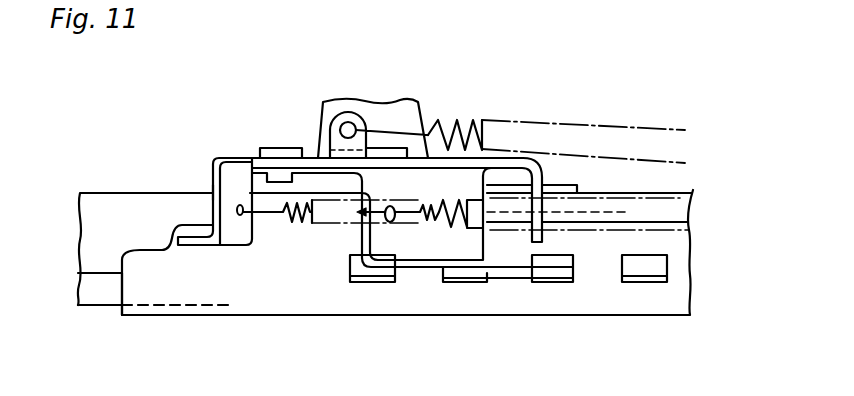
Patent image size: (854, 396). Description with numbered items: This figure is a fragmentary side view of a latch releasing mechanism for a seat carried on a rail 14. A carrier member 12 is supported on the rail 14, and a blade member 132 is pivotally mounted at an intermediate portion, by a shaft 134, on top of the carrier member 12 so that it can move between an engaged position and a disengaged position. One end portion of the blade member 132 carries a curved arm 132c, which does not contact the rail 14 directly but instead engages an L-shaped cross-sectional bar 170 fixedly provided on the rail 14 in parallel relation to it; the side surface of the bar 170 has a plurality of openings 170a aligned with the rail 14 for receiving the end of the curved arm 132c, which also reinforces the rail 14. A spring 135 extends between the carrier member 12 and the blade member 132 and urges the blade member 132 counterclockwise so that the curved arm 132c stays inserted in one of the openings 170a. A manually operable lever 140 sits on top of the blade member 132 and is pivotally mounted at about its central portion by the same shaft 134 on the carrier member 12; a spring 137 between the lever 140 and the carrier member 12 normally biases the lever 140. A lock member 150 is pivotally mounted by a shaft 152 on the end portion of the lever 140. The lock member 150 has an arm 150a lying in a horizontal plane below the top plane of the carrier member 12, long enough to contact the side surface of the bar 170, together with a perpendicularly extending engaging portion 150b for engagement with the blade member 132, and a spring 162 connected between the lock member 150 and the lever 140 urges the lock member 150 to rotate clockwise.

The carrier member 12 is at (118, 208).
The rail 14 is at (108, 297).
The lock member 150 is at (235, 153).
The arm 150a is at (195, 243).
The engaging portion 150b is at (212, 193).
The shaft 152 is at (278, 147).
The shaft 134 is at (320, 150).
The spring 137 is at (458, 122).
The lever 140 is at (560, 170).
The spring 162 is at (285, 222).
The blade member 132 is at (362, 233).
The curved arm 132c is at (548, 267).
The spring 135 is at (458, 227).
The bar 170 is at (667, 305).
The openings 170a is at (640, 265).